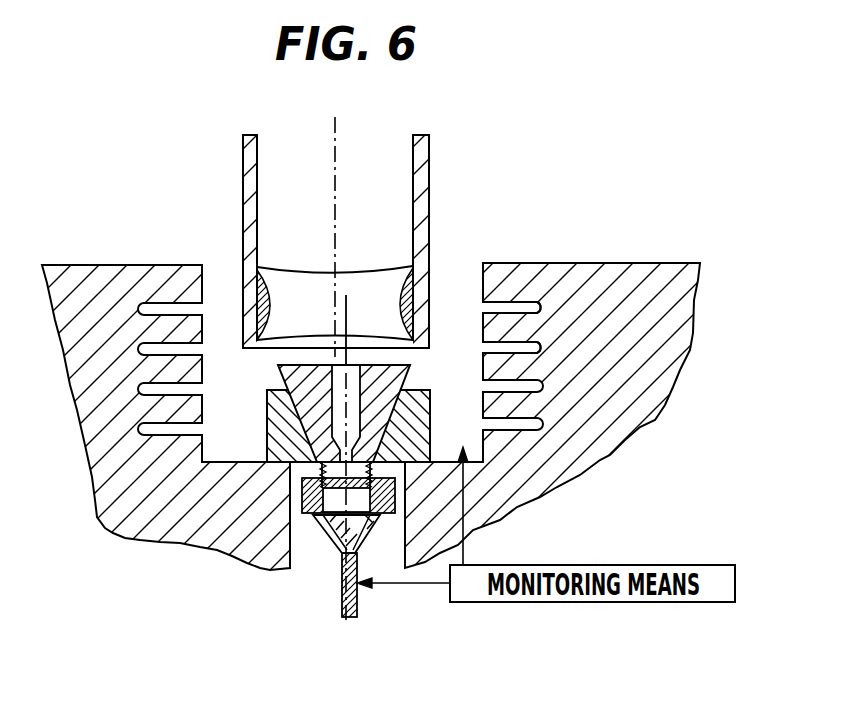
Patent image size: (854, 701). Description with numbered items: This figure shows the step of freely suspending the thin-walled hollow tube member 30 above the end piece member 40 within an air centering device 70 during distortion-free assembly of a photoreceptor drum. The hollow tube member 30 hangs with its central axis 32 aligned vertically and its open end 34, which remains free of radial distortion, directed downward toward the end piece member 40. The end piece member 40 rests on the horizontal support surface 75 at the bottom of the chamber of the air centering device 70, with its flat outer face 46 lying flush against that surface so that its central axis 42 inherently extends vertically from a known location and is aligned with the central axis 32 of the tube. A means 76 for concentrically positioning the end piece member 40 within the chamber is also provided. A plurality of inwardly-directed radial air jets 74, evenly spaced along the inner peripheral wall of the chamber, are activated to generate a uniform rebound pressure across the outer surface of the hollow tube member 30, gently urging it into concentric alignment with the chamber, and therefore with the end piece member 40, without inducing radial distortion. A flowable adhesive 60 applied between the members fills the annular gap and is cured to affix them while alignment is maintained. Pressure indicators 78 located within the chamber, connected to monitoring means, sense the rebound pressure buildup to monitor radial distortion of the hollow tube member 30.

The hollow tube member 30 is at (430, 155).
The central axis 32 is at (335, 150).
The open end 34 is at (260, 350).
The end piece member 40 is at (432, 391).
The central axis 42 is at (347, 308).
The flat outer face 46 is at (410, 438).
The flowable adhesive 60 is at (257, 284).
The air centering device 70 is at (586, 212).
The radial air jets 74 is at (485, 347).
The horizontal support surface 75 is at (247, 461).
The means for concentrically positioning 76 is at (342, 583).
The pressure indicators 78 is at (480, 458).